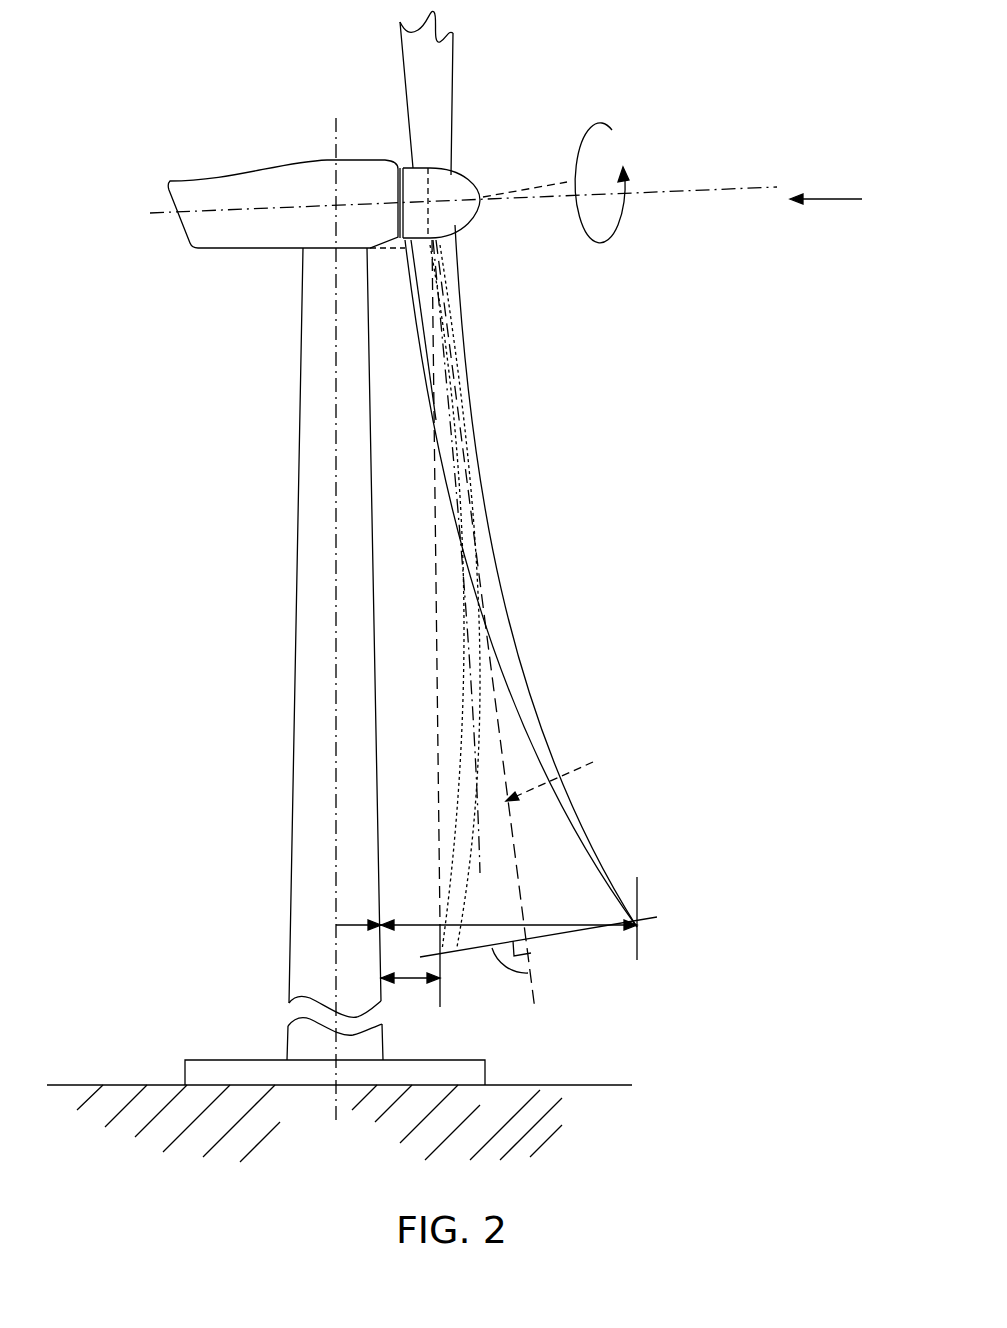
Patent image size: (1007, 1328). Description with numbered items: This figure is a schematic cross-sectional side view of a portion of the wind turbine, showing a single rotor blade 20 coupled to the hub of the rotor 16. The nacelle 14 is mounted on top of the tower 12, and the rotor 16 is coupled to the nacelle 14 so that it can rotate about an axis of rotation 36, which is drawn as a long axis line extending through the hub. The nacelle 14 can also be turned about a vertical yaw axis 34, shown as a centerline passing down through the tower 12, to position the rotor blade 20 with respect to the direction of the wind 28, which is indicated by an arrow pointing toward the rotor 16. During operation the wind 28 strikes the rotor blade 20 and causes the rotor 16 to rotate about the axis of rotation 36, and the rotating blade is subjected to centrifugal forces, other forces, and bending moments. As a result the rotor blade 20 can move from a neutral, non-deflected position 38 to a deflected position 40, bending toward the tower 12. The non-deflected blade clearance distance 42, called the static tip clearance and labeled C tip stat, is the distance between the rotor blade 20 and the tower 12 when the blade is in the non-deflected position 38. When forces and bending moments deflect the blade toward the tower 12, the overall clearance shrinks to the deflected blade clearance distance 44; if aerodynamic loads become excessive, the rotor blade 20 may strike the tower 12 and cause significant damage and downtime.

The tower 12 is at (292, 700).
The nacelle 14 is at (250, 252).
The rotor 16 is at (497, 106).
The rotor blade 20 is at (504, 582).
The wind 28 is at (837, 197).
The yaw axis 34 is at (336, 449).
The axis of rotation 36 is at (727, 187).
The non-deflected position 38 is at (531, 685).
The deflected position 40 is at (460, 737).
The non-deflected blade clearance distance 42 is at (573, 928).
The deflected blade clearance distance 44 is at (407, 982).